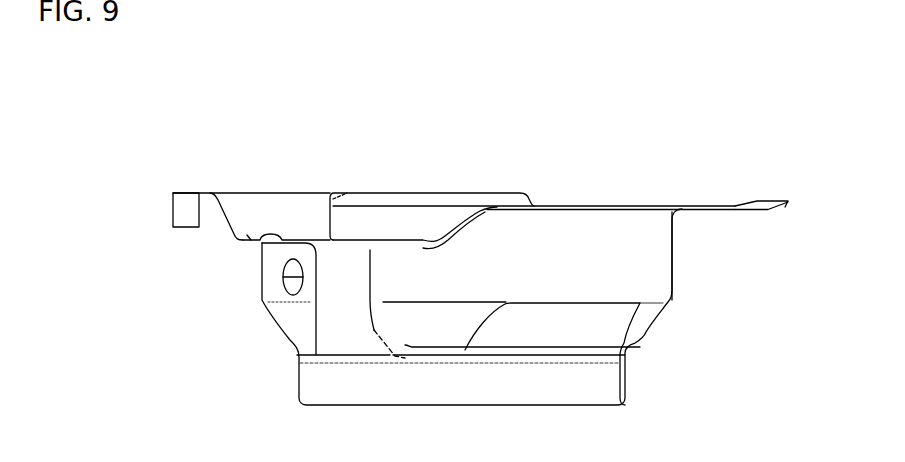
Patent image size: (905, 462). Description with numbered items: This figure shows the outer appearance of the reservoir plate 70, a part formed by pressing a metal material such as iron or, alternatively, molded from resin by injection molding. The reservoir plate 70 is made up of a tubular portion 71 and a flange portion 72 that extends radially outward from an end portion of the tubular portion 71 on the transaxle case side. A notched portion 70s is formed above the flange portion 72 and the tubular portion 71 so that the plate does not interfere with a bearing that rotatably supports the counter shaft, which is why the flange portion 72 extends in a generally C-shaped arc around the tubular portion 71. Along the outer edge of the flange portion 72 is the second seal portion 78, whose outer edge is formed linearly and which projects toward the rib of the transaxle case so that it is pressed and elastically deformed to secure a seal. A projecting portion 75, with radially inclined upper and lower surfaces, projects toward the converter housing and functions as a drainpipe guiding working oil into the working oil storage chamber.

The reservoir plate 70 is at (655, 157).
The notched portion 70s is at (464, 194).
The tubular portion 71 is at (278, 330).
The flange portion 72 is at (710, 212).
The projecting portion 75 is at (173, 207).
The second seal portion 78 is at (782, 210).